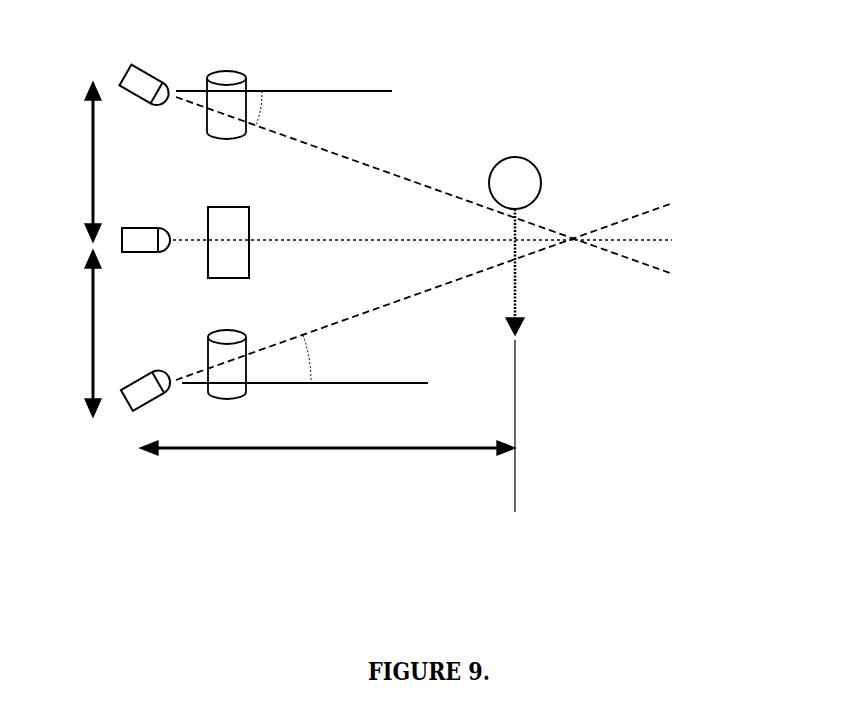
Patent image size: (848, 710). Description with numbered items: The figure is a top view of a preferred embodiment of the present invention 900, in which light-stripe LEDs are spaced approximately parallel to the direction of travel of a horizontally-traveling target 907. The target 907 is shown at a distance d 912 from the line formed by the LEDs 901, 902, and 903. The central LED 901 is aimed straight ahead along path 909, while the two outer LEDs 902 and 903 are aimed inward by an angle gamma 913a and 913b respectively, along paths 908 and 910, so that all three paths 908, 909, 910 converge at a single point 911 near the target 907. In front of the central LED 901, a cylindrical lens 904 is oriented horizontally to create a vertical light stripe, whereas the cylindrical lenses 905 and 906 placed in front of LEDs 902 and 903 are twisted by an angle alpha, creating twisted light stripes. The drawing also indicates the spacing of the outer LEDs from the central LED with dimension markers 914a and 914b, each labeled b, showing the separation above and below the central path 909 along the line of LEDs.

The preferred embodiment of the present invention 900 is at (662, 96).
The LED 901 is at (133, 228).
The LED 902 is at (147, 66).
The LED 903 is at (138, 378).
The cylindrical lens 904 is at (229, 207).
The cylindrical lens 905 is at (227, 71).
The cylindrical lens 906 is at (248, 373).
The horizontally-traveling target 907 is at (520, 158).
The path 908 is at (422, 184).
The path 909 is at (403, 238).
The path 910 is at (425, 292).
The point 911 is at (574, 242).
The distance d 912 is at (327, 467).
The angle gamma 913a is at (316, 108).
The angle gamma 913b is at (313, 353).
The upper emitter spacing b 914a is at (72, 162).
The lower emitter spacing b 914b is at (72, 333).